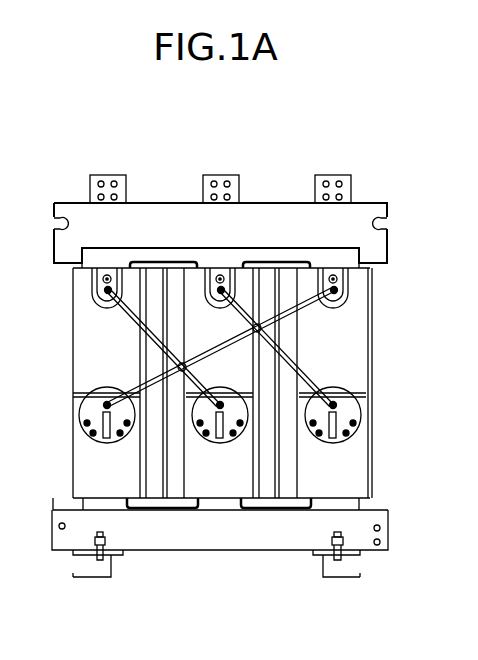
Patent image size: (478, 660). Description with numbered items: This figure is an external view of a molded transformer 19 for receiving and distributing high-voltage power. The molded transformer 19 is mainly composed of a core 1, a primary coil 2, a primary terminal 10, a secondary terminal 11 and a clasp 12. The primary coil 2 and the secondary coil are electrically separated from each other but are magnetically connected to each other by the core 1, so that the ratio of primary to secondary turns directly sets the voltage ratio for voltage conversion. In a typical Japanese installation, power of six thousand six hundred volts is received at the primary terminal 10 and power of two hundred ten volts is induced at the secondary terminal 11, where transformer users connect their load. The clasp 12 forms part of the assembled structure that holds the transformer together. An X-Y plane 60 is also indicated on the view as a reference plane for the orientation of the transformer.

The core 1 is at (293, 257).
The primary coil 2 is at (388, 313).
The primary terminal 10 is at (337, 267).
The secondary terminal 11 is at (331, 175).
The clasp 12 is at (350, 226).
The molded transformer for receiving and distributing high-voltage power 19 is at (235, 618).
The X-Y plane 60 is at (263, 348).